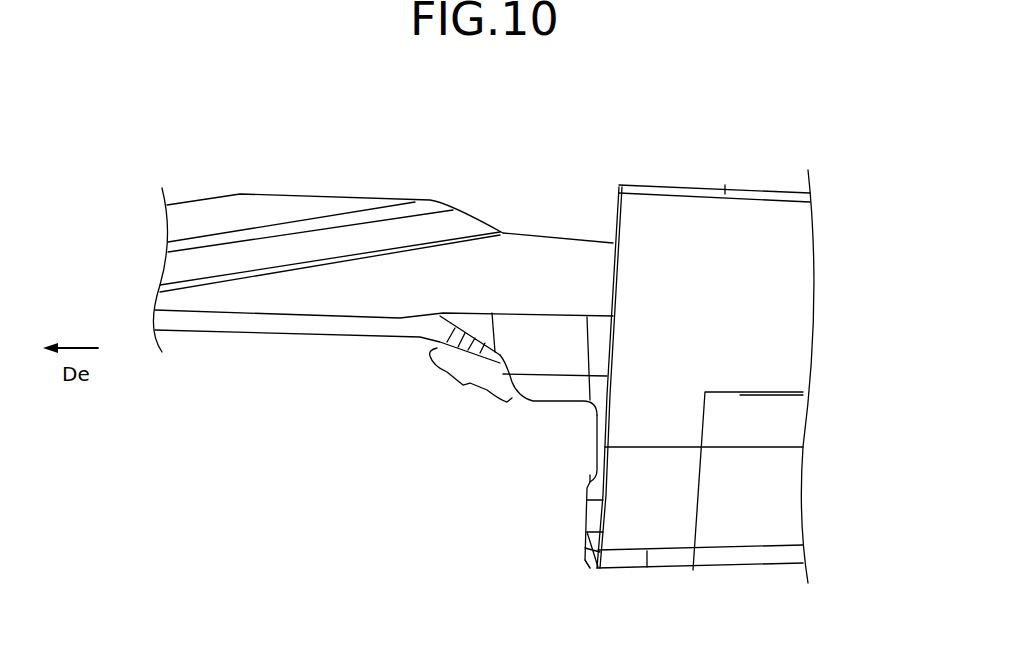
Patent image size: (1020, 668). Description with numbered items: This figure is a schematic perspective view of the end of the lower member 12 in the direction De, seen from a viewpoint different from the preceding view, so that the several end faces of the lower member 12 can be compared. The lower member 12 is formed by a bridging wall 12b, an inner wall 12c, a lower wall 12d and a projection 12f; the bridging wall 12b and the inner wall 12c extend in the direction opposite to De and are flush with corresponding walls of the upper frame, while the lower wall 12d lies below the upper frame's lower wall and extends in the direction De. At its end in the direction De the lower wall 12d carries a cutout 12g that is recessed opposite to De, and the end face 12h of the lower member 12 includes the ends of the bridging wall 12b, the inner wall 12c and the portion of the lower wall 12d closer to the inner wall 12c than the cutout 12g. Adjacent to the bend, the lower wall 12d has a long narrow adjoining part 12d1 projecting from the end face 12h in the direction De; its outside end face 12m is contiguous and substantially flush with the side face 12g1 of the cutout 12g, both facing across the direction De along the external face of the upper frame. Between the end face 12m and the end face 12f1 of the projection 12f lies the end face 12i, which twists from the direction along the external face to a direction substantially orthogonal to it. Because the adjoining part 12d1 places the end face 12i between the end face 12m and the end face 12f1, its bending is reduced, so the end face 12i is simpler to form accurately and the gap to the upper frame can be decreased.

The lower member 12 is at (650, 145).
The bridging wall 12b is at (760, 303).
The inner wall 12c is at (678, 573).
The lower wall 12d is at (600, 390).
The adjoining part 12d1 is at (553, 387).
The projection 12f is at (240, 297).
The end face 12f1 is at (235, 323).
The cutout 12g is at (583, 402).
The side face 12g1 is at (588, 472).
The end face 12h is at (590, 557).
The end face 12i is at (463, 385).
The end face 12m is at (553, 400).